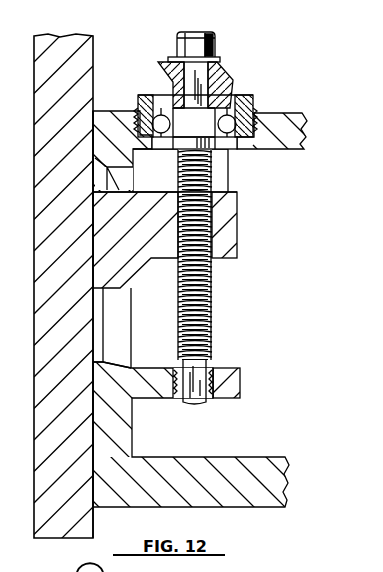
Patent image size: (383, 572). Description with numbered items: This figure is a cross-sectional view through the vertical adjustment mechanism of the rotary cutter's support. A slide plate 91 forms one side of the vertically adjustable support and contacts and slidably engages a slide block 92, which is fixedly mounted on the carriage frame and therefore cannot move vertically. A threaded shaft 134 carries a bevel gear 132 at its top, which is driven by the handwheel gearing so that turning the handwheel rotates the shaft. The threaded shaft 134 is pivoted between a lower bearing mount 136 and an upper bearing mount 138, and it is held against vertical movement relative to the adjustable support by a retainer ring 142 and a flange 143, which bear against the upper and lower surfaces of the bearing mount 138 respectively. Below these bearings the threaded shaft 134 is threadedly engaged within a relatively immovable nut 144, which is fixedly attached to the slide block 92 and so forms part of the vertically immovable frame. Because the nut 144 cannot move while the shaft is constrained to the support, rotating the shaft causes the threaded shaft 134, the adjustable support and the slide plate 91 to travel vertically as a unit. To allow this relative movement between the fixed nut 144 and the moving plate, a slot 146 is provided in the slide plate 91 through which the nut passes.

The slide plate 91 is at (110, 114).
The slide block 92 is at (35, 80).
The bevel gear 132 is at (231, 70).
The threaded shaft 134 is at (212, 182).
The bearing mount 136 is at (242, 382).
The bearing mount 138 is at (256, 143).
The retainer ring 142 is at (257, 104).
The flange 143 is at (177, 152).
The nut 144 is at (240, 230).
The slot 146 is at (118, 367).